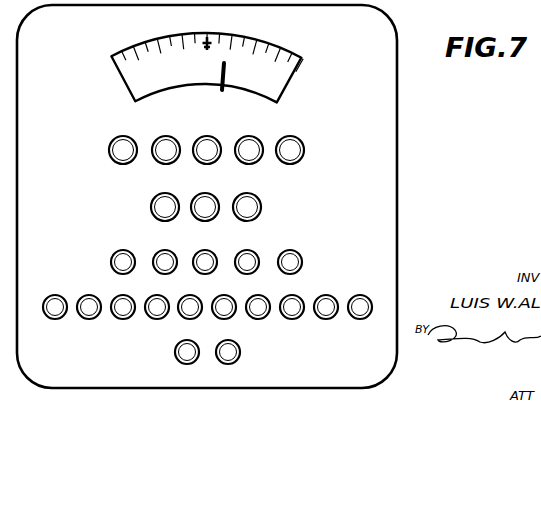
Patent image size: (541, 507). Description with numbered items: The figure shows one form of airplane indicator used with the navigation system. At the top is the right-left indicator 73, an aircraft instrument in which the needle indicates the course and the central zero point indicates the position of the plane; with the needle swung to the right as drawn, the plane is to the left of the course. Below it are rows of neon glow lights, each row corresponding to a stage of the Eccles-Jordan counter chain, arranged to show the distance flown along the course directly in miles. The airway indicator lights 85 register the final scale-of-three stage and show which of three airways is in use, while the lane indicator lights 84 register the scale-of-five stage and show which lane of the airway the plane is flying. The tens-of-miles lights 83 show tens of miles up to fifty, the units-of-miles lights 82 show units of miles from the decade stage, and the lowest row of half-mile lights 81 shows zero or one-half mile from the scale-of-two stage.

The right-left indicator 73 is at (300, 70).
The airway indicator lights 85 is at (304, 150).
The lane indicator lights 84 is at (261, 207).
The tens-of-miles lights 83 is at (302, 262).
The units-of-miles lights 82 is at (372, 307).
The half-mile lights 81 is at (240, 352).